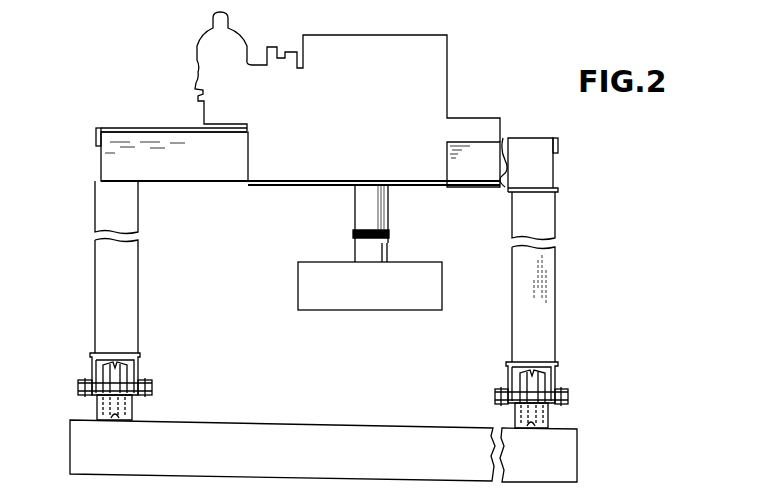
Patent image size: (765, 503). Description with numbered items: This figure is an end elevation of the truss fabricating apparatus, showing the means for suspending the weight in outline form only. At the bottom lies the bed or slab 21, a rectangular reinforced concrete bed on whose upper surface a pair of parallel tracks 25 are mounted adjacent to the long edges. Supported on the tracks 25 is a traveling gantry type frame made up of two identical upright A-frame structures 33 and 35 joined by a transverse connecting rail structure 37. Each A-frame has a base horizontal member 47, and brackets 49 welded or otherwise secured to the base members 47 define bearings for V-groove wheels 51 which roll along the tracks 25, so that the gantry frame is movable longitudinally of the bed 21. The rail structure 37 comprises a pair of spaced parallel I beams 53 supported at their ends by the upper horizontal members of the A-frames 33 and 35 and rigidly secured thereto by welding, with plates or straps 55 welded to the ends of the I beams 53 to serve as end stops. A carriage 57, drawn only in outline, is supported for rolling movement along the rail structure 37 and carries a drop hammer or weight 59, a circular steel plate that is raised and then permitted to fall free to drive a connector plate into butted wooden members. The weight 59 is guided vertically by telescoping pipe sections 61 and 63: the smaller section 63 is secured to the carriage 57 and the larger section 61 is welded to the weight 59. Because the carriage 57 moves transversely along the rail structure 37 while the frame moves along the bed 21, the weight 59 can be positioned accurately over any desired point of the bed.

The bed or slab 21 is at (392, 456).
The parallel tracks 25 is at (132, 411).
The upright A-frame structure 33 is at (88, 290).
The upright A-frame structure 35 is at (562, 292).
The transverse connecting rail structure 37 is at (148, 122).
The base horizontal member 47 is at (537, 362).
The brackets 49 is at (510, 378).
The V-groove wheels 51 is at (115, 375).
The I beams 53 is at (200, 164).
The plates or straps 55 is at (96, 137).
The carriage 57 is at (353, 118).
The drop hammer or weight 59 is at (371, 300).
The larger telescoping pipe section 61 is at (392, 255).
The smaller telescoping pipe section 63 is at (360, 210).